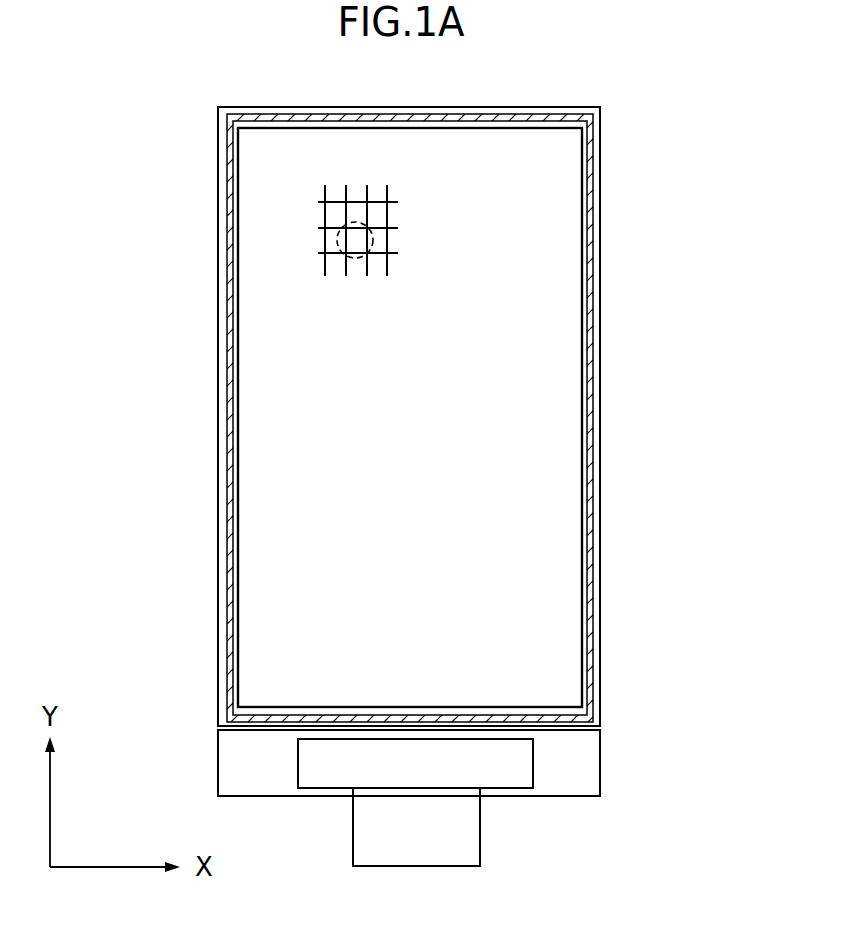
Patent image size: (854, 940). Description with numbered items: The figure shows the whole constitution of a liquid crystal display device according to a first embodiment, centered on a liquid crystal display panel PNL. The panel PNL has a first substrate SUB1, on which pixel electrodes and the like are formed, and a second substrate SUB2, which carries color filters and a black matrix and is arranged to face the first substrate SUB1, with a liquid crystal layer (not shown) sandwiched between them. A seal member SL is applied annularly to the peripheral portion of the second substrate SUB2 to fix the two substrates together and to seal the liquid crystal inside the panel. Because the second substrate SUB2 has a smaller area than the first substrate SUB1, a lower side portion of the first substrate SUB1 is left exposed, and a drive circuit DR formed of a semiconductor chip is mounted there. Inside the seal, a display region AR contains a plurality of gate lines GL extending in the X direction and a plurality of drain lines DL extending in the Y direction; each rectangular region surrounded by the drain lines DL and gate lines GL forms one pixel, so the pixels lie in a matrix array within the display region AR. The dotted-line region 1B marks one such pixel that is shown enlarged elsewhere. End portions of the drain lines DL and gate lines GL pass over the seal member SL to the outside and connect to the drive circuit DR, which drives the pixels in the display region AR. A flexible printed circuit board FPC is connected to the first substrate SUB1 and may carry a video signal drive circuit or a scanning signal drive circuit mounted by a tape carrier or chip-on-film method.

The liquid crystal display panel PNL is at (470, 486).
The second substrate SUB2 is at (600, 615).
The seal member SL is at (590, 490).
The display region AR is at (558, 375).
The drain lines DL is at (389, 193).
The gate lines GL is at (395, 255).
The region shown in FIG. 1B is at (373, 239).
The first substrate SUB1 is at (600, 764).
The drive circuit DR is at (318, 780).
The flexible printed circuit board FPC is at (480, 835).